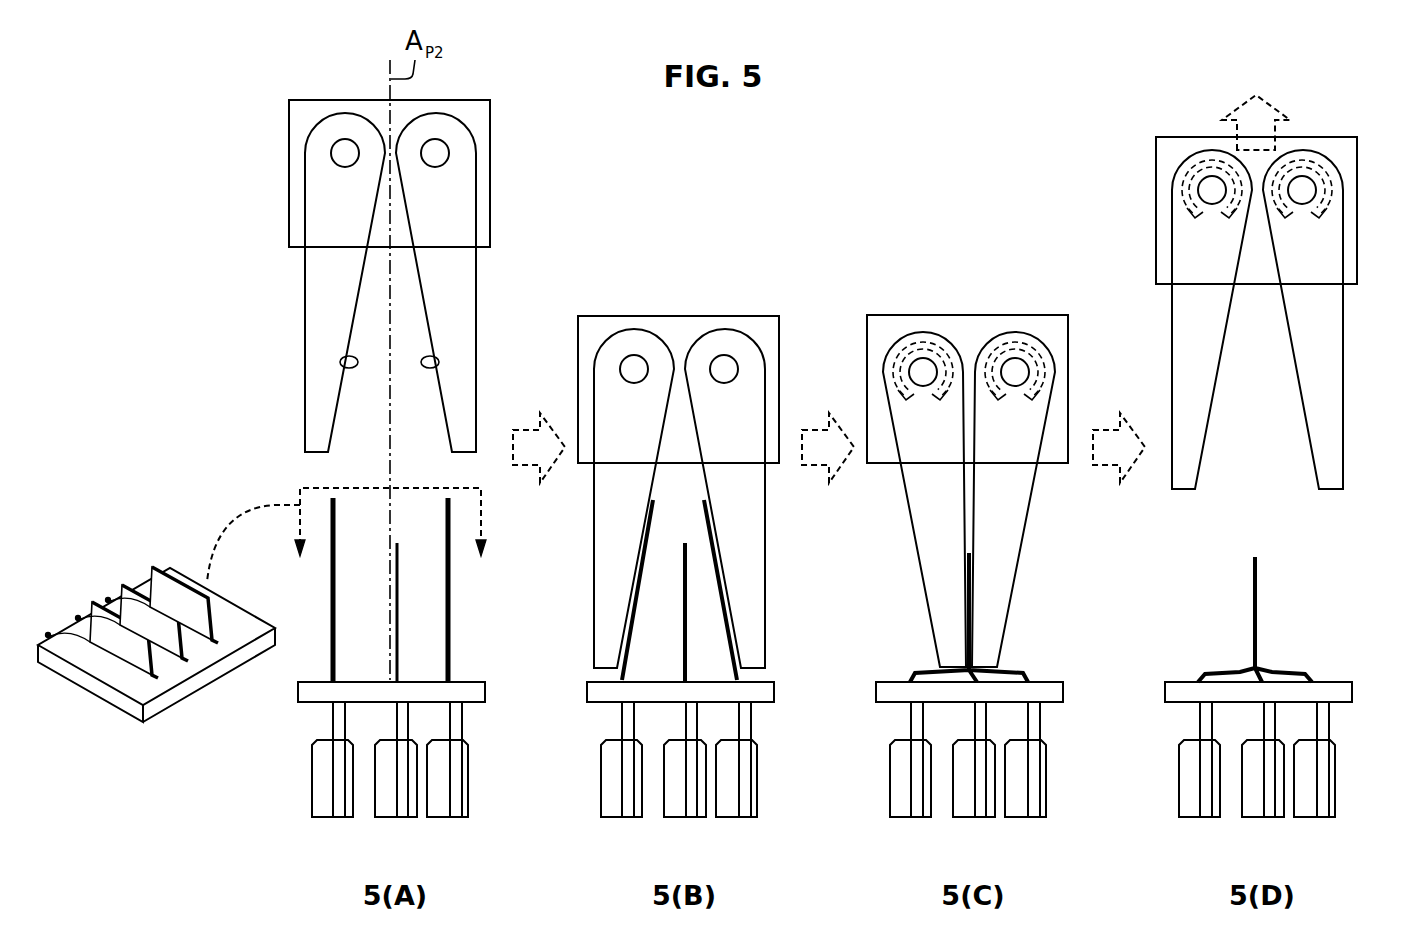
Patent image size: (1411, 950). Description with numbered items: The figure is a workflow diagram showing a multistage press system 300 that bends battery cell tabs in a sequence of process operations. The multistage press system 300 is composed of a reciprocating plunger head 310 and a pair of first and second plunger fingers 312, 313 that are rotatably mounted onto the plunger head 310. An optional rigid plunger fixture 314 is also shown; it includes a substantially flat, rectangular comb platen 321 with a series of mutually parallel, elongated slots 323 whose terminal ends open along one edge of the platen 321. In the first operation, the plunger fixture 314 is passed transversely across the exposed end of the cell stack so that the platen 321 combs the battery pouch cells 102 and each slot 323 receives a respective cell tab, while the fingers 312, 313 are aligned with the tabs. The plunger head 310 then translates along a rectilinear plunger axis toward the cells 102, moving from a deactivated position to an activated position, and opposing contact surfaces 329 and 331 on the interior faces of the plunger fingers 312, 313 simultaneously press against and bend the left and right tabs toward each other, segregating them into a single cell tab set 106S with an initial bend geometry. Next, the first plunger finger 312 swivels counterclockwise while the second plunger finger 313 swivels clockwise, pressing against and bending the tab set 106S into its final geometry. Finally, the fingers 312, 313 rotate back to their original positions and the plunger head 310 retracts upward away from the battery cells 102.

The multistage press system 300 is at (275, 113).
The plunger head 310 is at (289, 147).
The first plunger finger 312 is at (305, 305).
The second plunger finger 313 is at (476, 305).
The contact surface 329 is at (340, 366).
The contact surface 331 is at (439, 366).
The plunger fixture 314 is at (98, 722).
The comb platen 321 is at (163, 703).
The elongated slots 323 is at (52, 632).
The cell tab set 106S is at (608, 672).
The battery pouch cells 102 is at (323, 820).